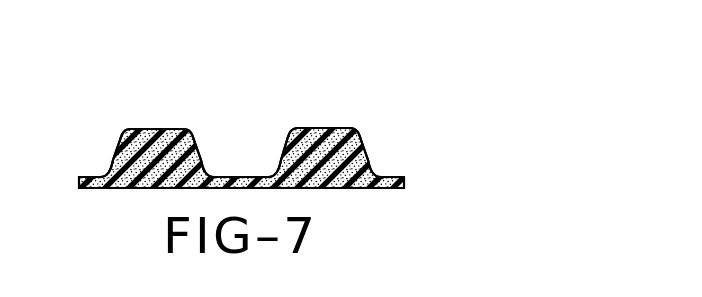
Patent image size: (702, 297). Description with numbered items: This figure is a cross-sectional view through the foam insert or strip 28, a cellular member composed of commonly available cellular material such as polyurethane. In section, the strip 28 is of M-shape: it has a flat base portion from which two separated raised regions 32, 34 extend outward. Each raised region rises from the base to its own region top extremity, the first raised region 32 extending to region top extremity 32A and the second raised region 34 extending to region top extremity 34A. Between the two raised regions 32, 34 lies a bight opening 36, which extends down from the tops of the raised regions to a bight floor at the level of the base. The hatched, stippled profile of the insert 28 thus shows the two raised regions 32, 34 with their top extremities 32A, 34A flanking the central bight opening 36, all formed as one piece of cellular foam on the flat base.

The foam insert or strip 28 is at (299, 110).
The raised region 32 is at (360, 135).
The region top extremity 32A is at (325, 128).
The raised region 34 is at (121, 136).
The region top extremity 34A is at (163, 129).
The bight opening 36 is at (242, 172).